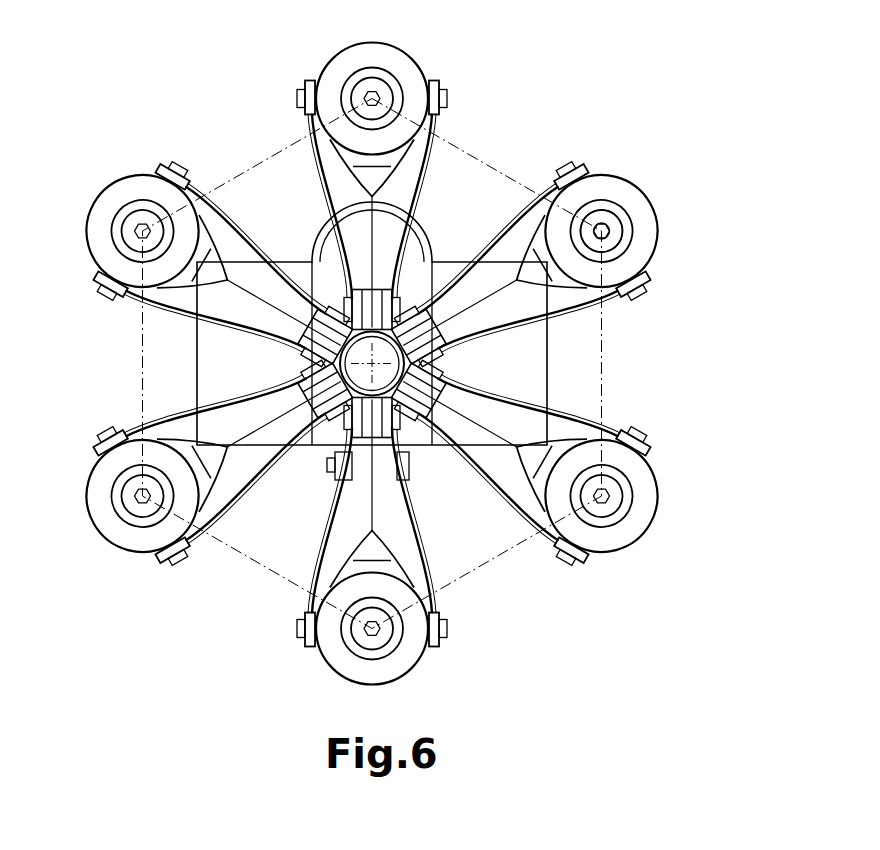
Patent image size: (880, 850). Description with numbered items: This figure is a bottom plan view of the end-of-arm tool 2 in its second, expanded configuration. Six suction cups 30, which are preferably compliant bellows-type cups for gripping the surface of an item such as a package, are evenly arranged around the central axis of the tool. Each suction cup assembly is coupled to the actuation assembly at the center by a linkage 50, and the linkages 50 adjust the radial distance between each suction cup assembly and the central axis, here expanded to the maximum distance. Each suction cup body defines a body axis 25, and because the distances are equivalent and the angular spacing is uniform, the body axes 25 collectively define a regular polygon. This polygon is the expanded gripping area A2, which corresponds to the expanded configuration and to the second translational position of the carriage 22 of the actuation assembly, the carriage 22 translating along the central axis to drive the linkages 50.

The end-of-arm tool 2 is at (530, 107).
The carriage 22 is at (410, 360).
The body axis 25 is at (615, 237).
The suction cup 30 is at (405, 70).
The linkage 50 is at (297, 535).
The expanded gripping area A2 is at (260, 165).